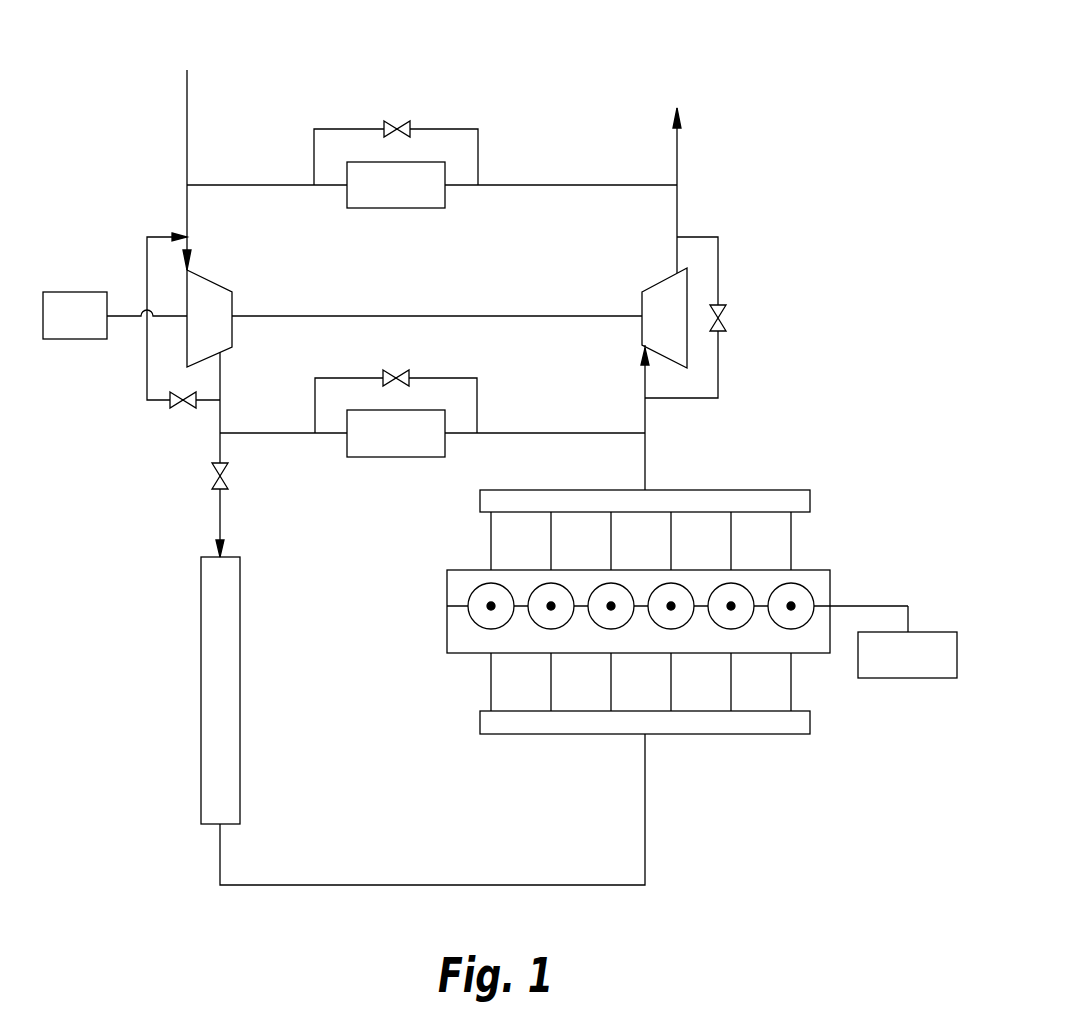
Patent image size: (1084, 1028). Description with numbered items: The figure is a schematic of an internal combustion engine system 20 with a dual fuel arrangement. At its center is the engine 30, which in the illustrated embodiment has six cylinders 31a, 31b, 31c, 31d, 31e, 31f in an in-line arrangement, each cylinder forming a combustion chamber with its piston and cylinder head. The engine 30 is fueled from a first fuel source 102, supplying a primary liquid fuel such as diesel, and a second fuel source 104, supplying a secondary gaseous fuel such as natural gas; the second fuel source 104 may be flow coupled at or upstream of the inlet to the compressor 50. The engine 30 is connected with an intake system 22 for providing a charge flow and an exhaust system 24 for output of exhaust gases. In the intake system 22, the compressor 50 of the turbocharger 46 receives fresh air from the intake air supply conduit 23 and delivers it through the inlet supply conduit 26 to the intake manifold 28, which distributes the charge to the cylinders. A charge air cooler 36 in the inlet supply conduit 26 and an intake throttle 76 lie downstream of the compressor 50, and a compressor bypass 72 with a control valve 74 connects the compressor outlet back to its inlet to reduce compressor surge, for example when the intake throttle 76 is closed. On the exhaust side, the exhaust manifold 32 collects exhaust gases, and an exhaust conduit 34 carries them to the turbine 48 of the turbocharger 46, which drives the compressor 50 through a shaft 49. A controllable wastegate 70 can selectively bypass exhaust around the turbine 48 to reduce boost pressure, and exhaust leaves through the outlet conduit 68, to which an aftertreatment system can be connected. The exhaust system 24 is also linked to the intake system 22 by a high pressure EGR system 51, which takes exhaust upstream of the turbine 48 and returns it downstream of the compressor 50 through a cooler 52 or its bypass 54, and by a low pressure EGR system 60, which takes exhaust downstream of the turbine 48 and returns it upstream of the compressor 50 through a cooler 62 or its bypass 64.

The internal combustion engine system 20 is at (898, 434).
The intake system 22 is at (170, 810).
The intake air supply conduit 23 is at (187, 120).
The exhaust system 24 is at (735, 192).
The inlet supply conduit 26 is at (647, 818).
The intake manifold 28 is at (747, 734).
The engine 30 is at (447, 607).
The cylinder 31a is at (790, 620).
The cylinder 31b is at (720, 616).
The cylinder 31c is at (668, 620).
The cylinder 31d is at (607, 614).
The cylinder 31e is at (545, 620).
The cylinder 31f is at (500, 604).
The exhaust manifold 32 is at (747, 490).
The exhaust conduit 34 is at (647, 475).
The charge air cooler 36 is at (201, 682).
The turbocharger 46 is at (405, 292).
The turbine 48 is at (681, 330).
The shaft 49 is at (313, 316).
The compressor 50 is at (224, 329).
The high pressure EGR system 51 is at (385, 475).
The cooler 52 is at (430, 442).
The bypass 54 is at (459, 378).
The low pressure EGR system 60 is at (398, 98).
The cooler 62 is at (430, 195).
The bypass 64 is at (459, 129).
The outlet conduit 68 is at (677, 165).
The controllable wastegate 70 is at (718, 263).
The compressor bypass 72 is at (147, 385).
The control valve 74 is at (180, 409).
The intake throttle 76 is at (211, 484).
The first fuel source 102 is at (913, 632).
The second fuel source 104 is at (80, 292).